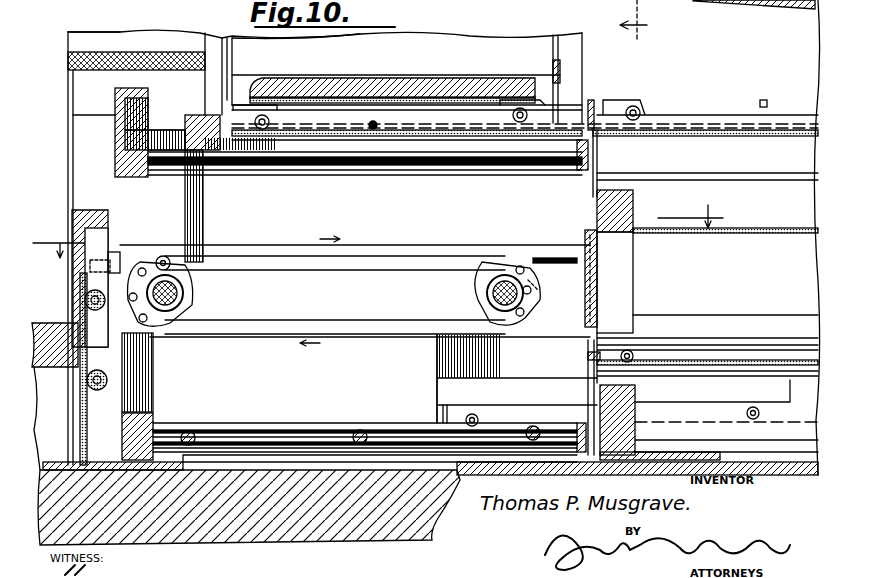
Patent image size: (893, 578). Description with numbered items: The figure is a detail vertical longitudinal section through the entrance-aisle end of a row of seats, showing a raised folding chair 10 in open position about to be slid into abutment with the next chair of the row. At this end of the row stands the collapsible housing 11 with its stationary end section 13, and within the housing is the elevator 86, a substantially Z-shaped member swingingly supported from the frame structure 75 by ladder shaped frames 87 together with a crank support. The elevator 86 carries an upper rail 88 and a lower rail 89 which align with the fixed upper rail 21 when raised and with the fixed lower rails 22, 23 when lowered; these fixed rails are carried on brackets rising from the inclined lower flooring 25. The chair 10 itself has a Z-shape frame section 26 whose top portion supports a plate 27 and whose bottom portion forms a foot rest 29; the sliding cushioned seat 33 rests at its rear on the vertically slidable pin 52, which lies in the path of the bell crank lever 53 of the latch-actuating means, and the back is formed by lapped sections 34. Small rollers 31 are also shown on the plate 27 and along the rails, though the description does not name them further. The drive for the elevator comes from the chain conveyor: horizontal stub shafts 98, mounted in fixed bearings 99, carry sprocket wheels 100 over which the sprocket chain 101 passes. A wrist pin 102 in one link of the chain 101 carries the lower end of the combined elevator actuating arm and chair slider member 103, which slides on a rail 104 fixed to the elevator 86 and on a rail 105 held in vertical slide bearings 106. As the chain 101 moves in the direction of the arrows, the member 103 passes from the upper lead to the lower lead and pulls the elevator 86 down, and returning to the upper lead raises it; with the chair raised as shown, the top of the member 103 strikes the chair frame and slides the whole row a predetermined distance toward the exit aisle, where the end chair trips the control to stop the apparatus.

The collapsible housing 11 is at (165, 28).
The elevator 86 is at (118, 104).
The upper rail of elevator 88 is at (166, 128).
The combined elevator actuating arm and chair slider member 103 is at (192, 113).
The sliding cushioned seat 33 is at (360, 84).
The vertically slidable pin 52 is at (412, 90).
The back sections 34 is at (296, 43).
The roller 31 is at (520, 72).
The plate 27 is at (452, 132).
The bell crank lever 53 is at (375, 130).
The rail 104 is at (388, 168).
The lower rail 22 is at (698, 176).
The folding chair 10 is at (645, 20).
The stationary end section 13 is at (390, 229).
The vertical slide bearings 106 is at (113, 255).
The frame structure 75 is at (78, 422).
The sprocket chain 101 is at (372, 335).
The sprocket wheels 100 is at (190, 290).
The horizontal stub shafts 98 is at (190, 305).
The fixed bearings 99 is at (532, 290).
The wrist pin 102 is at (165, 256).
The rail 105 is at (540, 256).
The Z-shape frame section 26 is at (429, 381).
The upper rail 21 is at (587, 355).
The ladder shaped frames 87 is at (330, 425).
The lower rail of elevator 89 is at (250, 425).
The lower rail 23 is at (668, 420).
The foot rest 29 is at (627, 360).
The lower flooring 25 is at (340, 527).